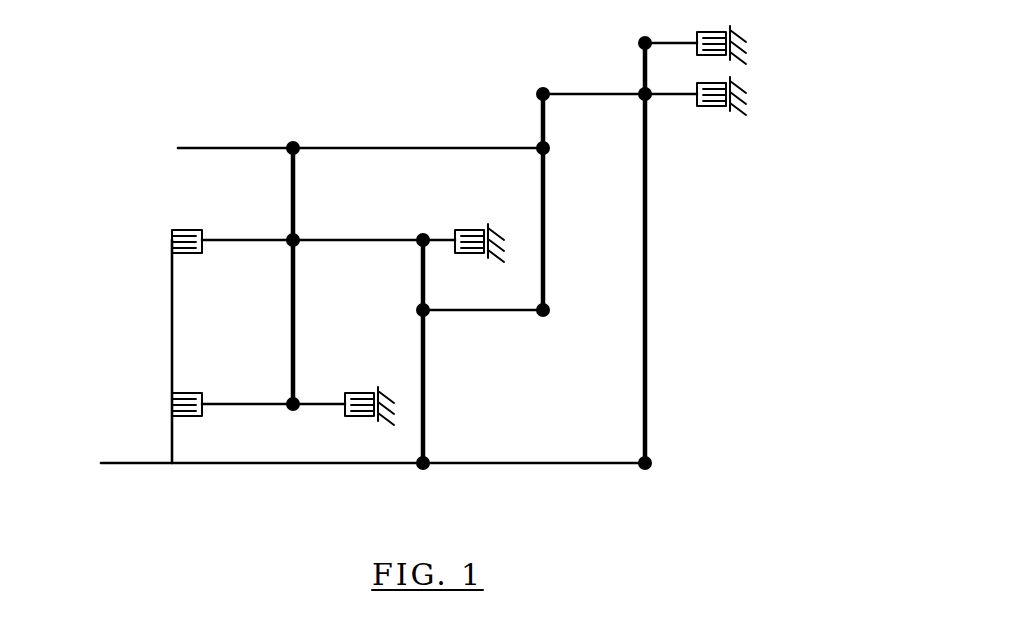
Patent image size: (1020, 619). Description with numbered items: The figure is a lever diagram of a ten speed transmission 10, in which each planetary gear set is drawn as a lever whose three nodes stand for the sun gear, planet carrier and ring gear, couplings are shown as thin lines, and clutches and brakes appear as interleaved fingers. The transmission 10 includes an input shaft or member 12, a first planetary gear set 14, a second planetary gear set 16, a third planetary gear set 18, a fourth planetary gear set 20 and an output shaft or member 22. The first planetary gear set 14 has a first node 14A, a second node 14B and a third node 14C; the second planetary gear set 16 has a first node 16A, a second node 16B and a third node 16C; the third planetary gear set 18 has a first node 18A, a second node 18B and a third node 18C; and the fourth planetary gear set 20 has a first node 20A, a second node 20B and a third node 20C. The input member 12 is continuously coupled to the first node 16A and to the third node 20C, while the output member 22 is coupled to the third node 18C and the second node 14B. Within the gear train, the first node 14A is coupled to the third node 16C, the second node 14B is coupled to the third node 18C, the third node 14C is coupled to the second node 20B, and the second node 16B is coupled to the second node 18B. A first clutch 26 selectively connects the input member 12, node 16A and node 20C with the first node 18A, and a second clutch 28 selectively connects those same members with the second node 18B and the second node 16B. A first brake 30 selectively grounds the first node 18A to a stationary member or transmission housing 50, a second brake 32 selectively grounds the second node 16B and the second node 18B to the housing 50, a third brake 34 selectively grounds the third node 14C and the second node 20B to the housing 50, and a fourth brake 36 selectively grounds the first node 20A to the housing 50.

The ten speed transmission 10 is at (800, 72).
The input shaft or member 12 is at (110, 466).
The first planetary gear set 14 is at (489, 97).
The first node of the first planetary gear set 14A is at (541, 315).
The second node of the first planetary gear set 14B is at (551, 146).
The third node of the first planetary gear set 14C is at (540, 89).
The second planetary gear set 16 is at (440, 213).
The first node of the second planetary gear set 16A is at (421, 470).
The second node of the second planetary gear set 16B is at (421, 234).
The third node of the second planetary gear set 16C is at (419, 310).
The third planetary gear set 18 is at (280, 137).
The first node of the third planetary gear set 18A is at (291, 410).
The second node of the third planetary gear set 18B is at (300, 237).
The third node of the third planetary gear set 18C is at (294, 140).
The fourth planetary gear set 20 is at (684, 206).
The first node of the fourth planetary gear set 20A is at (639, 43).
The second node of the fourth planetary gear set 20B is at (640, 90).
The third node of the fourth planetary gear set 20C is at (652, 463).
The output shaft or member 22 is at (216, 151).
The first clutch 26 is at (193, 390).
The second clutch 28 is at (192, 228).
The first brake 30 is at (357, 392).
The second brake 32 is at (466, 256).
The third brake 34 is at (706, 108).
The fourth brake 36 is at (708, 57).
The stationary member or transmission housing 50 is at (738, 63).